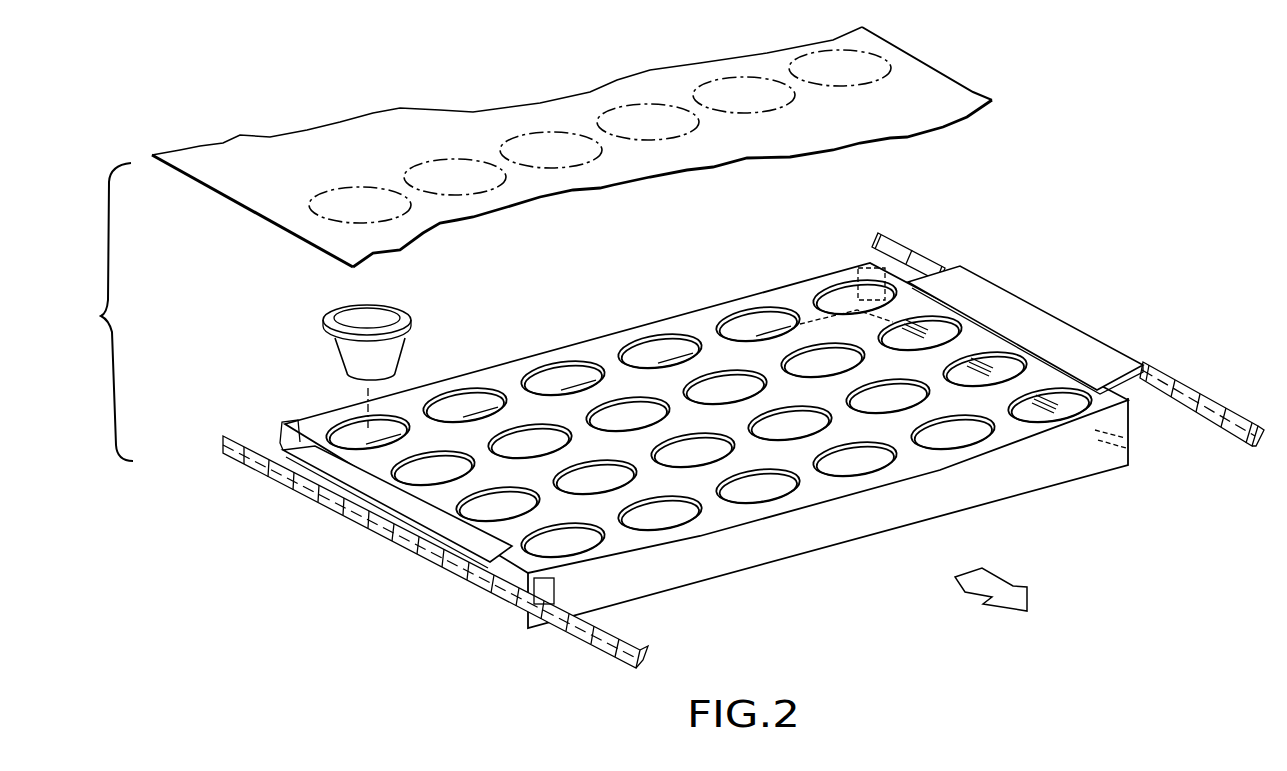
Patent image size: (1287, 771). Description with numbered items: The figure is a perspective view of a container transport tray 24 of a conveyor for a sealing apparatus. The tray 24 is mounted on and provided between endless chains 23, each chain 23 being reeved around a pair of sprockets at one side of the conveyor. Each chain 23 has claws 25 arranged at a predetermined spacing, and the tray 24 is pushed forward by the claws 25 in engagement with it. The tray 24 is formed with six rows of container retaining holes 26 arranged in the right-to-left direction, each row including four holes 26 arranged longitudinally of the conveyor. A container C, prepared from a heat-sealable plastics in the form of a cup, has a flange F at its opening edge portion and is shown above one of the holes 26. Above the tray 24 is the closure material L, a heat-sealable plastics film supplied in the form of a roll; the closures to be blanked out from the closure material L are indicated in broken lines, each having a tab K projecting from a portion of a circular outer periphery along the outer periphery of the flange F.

The endless chain 23 is at (1242, 438).
The tray 24 is at (738, 290).
The claw 25 is at (918, 268).
The container retaining hole 26 is at (641, 348).
The tab K is at (316, 200).
The closure material L is at (980, 93).
The container C is at (415, 296).
The flange F is at (413, 320).